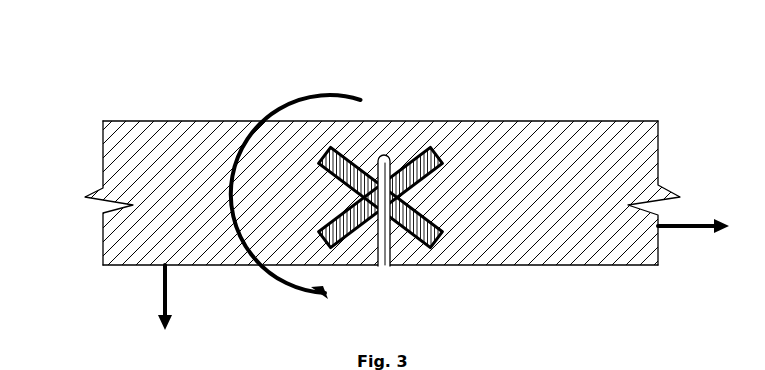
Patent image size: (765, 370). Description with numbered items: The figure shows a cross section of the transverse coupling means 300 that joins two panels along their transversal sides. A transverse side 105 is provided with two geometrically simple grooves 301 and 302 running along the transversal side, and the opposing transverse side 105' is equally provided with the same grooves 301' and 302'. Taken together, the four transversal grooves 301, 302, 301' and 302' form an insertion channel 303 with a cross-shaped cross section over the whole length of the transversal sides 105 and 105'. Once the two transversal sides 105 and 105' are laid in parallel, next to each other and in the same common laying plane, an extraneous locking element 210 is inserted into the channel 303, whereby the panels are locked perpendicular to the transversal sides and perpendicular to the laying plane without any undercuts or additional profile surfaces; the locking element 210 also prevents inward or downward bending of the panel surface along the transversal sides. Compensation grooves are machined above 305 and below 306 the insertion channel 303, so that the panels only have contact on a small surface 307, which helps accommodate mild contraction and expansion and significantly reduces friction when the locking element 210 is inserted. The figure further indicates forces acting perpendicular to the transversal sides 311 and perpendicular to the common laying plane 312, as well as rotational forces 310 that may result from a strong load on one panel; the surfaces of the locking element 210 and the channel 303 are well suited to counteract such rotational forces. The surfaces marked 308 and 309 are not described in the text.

The transverse coupling means 300 is at (229, 93).
The transverse side 105 is at (683, 193).
The opposing transverse side 105' is at (70, 193).
The extraneous locking element 210 is at (388, 178).
The groove 301 is at (411, 154).
The groove 301' is at (266, 89).
The groove 302 is at (426, 224).
The groove 302' is at (313, 294).
The insertion channel 303 is at (387, 157).
The compensation groove 305 is at (425, 243).
The compensation groove 306 is at (385, 265).
The contact surface 307 is at (380, 157).
The top surface 308 is at (637, 120).
The bottom surface 309 is at (648, 265).
The rotational forces 310 is at (257, 195).
The forces perpendicular to the transversal sides 311 is at (697, 232).
The forces perpendicular to the common laying plane 312 is at (160, 303).